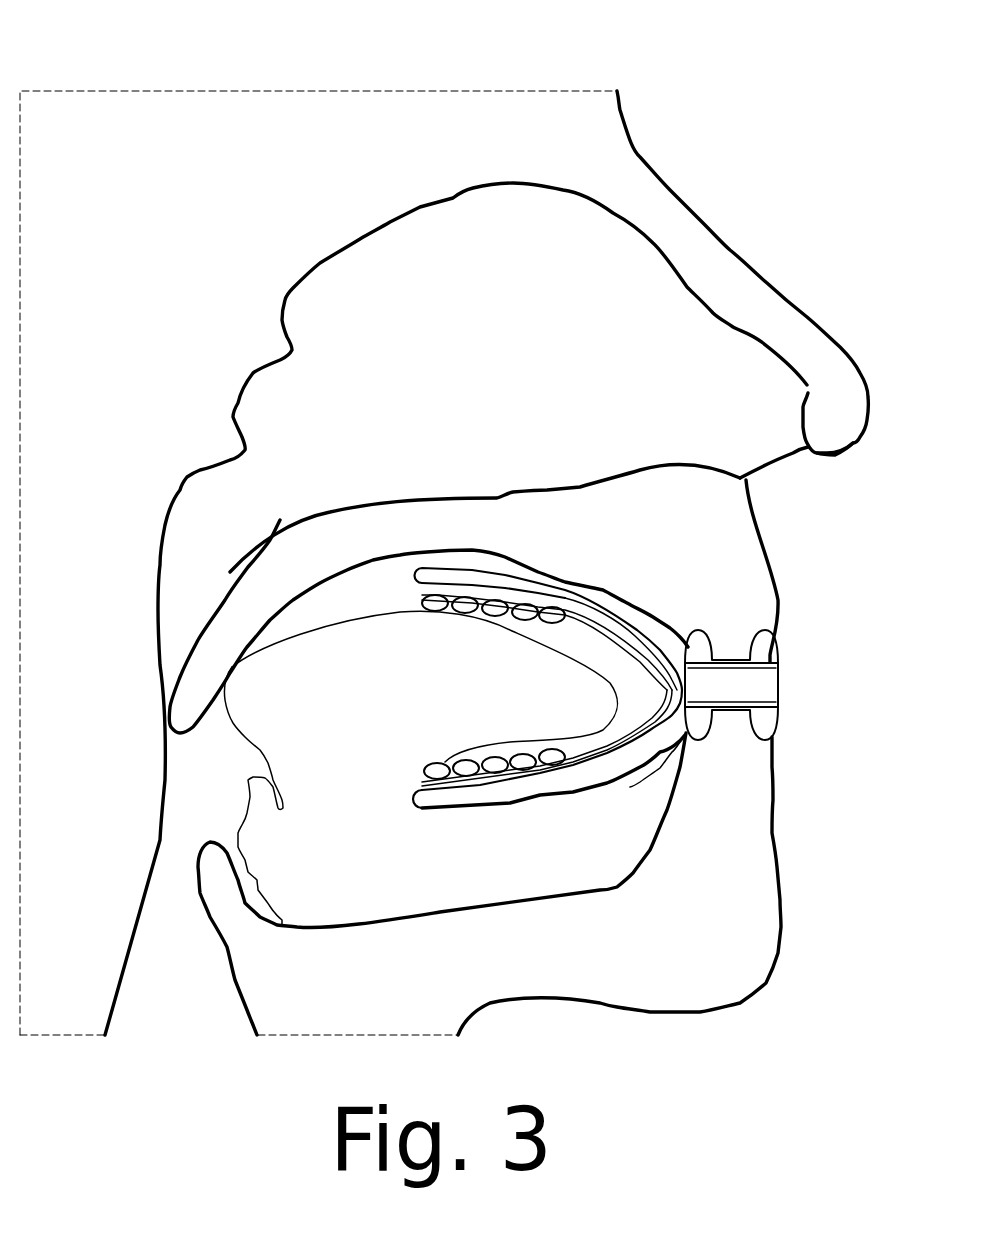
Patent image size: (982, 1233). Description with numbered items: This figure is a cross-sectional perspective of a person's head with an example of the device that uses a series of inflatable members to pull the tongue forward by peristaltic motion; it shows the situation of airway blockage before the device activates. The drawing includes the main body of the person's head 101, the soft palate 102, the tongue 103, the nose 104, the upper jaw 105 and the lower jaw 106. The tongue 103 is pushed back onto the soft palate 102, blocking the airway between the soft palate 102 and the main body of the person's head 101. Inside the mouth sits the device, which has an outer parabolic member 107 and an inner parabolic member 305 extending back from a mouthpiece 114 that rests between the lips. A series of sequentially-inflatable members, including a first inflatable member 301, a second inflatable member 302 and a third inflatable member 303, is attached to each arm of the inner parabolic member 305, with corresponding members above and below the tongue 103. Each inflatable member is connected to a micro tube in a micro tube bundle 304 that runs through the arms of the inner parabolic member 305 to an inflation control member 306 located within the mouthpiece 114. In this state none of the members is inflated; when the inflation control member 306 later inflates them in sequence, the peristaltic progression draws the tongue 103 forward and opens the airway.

The main body of the person's head 101 is at (172, 312).
The soft palate 102 is at (250, 590).
The tongue 103 is at (283, 712).
The nose 104 is at (750, 305).
The upper jaw 105 is at (720, 565).
The lower jaw 106 is at (728, 790).
The outer parabolic member 107 is at (468, 578).
The mouthpiece 114 is at (758, 662).
The first inflatable member 301 is at (427, 605).
The second inflatable member 302 is at (468, 608).
The third inflatable member 303 is at (495, 612).
The micro tube bundle 304 is at (583, 617).
The inner parabolic member 305 is at (660, 657).
The inflation control member 306 is at (757, 688).